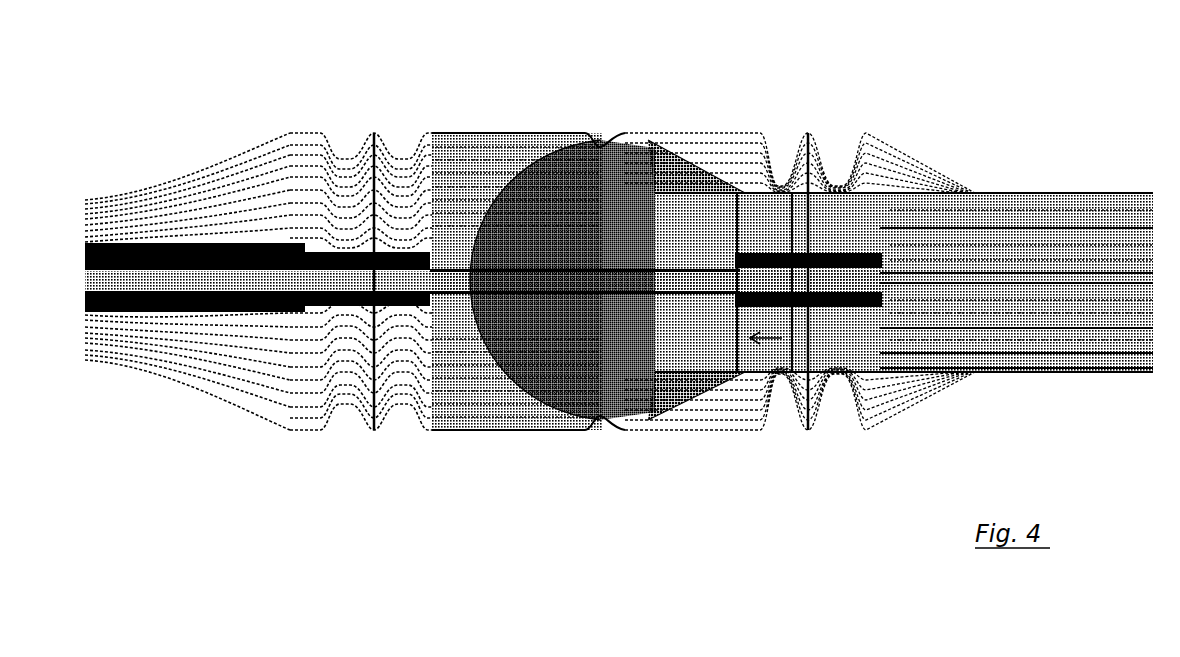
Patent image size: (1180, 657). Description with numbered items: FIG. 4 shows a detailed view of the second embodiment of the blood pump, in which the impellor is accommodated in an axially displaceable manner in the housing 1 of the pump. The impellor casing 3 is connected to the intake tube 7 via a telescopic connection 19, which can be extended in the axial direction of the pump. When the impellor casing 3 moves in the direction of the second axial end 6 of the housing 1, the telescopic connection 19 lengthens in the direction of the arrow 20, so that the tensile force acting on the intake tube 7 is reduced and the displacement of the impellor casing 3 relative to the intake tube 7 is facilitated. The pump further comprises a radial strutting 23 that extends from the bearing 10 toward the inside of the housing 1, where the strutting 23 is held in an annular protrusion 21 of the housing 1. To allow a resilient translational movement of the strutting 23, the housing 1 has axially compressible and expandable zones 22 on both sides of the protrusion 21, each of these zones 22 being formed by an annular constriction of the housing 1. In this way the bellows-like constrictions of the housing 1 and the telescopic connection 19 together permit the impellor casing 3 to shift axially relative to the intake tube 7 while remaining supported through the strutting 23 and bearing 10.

The housing 1 is at (710, 428).
The impellor casing 3 is at (707, 380).
The second axial end 6 is at (165, 185).
The intake tube 7 is at (1025, 228).
The bearing 10 is at (855, 312).
The telescopic connection 19 is at (760, 220).
The arrow 20 is at (766, 327).
The annular protrusion 21 is at (381, 108).
The compressible and expandable zones 22 is at (412, 446).
The radial strutting 23 is at (380, 153).